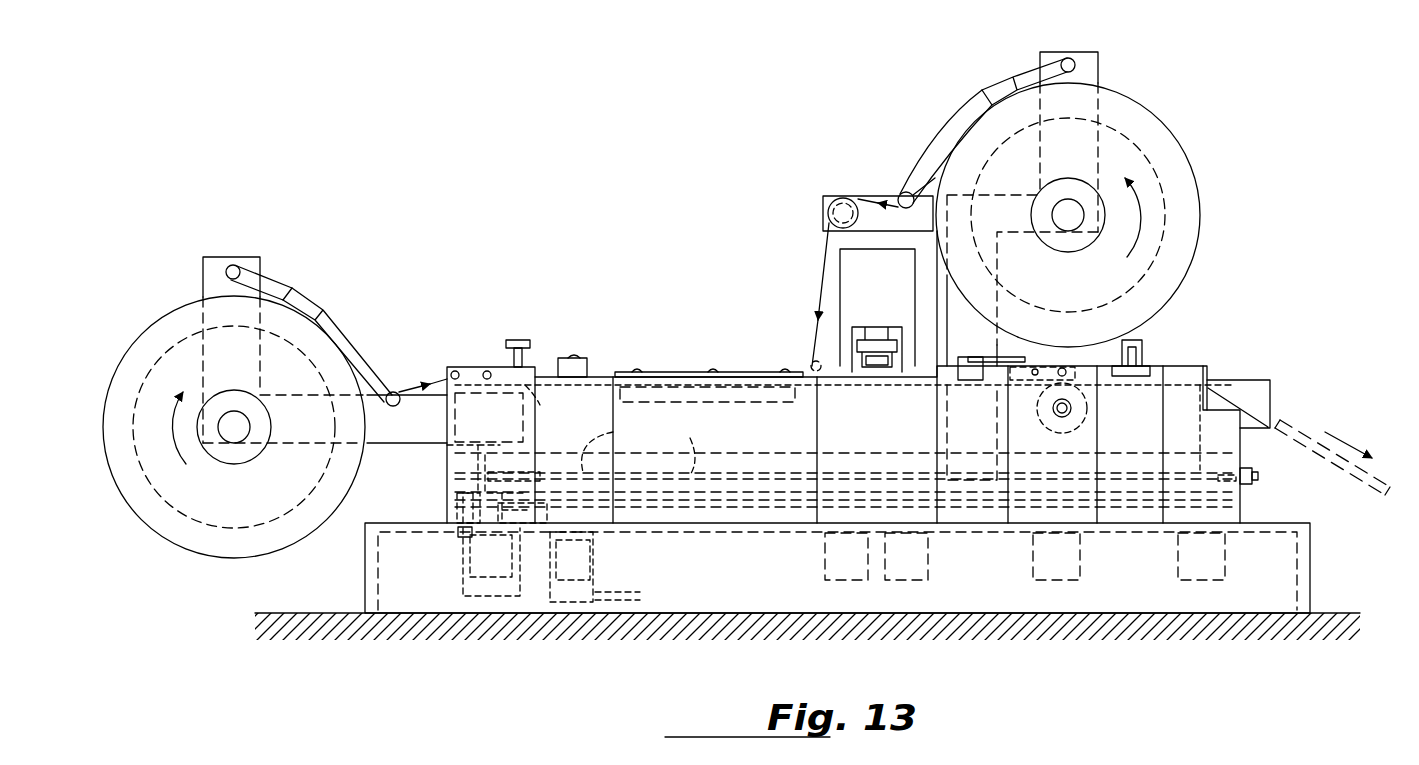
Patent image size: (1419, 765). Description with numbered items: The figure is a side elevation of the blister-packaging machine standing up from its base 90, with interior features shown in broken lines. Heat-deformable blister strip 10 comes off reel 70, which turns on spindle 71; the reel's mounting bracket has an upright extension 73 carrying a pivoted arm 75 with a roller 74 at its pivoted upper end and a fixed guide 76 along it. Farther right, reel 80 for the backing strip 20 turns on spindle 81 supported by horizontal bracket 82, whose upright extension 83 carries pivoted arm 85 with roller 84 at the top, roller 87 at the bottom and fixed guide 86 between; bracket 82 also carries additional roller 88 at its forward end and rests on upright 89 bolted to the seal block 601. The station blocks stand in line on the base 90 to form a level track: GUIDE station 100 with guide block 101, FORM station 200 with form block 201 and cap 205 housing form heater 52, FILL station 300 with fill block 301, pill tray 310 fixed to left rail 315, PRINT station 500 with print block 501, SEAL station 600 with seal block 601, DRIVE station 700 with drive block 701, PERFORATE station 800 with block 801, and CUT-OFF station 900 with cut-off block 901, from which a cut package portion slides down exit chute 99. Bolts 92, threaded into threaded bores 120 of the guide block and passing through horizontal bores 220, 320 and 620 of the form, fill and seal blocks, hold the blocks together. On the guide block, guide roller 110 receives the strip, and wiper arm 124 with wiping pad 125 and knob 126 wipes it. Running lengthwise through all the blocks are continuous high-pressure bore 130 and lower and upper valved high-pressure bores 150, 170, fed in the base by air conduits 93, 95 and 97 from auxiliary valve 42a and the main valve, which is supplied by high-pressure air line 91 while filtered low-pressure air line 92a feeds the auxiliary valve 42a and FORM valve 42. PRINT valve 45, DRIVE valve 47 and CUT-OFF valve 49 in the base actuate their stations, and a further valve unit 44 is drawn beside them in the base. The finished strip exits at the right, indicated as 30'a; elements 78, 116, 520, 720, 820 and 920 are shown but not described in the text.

The heat-deformable blister strip 10 is at (408, 404).
The backing strip 20 is at (826, 277).
The output conveyor 30'a is at (1332, 428).
The FORM valve 42 is at (560, 605).
The auxiliary valve 42a is at (588, 605).
The drive unit 44 is at (855, 580).
The PRINT valve 45 is at (915, 580).
The DRIVE valve 47 is at (1060, 580).
The CUT-OFF valve 49 is at (1226, 575).
The FORM HEATER 52 is at (381, 445).
The reel 70 is at (200, 548).
The spindle 71 is at (240, 432).
The upright extension 73 is at (205, 280).
The roller 74 is at (236, 266).
The pivoted arm 75 is at (335, 322).
The fixed guide 76 is at (300, 287).
The guide roller 78 is at (397, 391).
The reel 80 is at (1200, 232).
The spindle 81 is at (1072, 222).
The horizontal bracket 82 is at (1015, 228).
The upright extension 83 is at (1097, 70).
The roller 84 is at (1071, 60).
The pivoted arm 85 is at (960, 118).
The fixed guide 86 is at (990, 88).
The roller 87 is at (904, 192).
The additional roller 88 is at (836, 195).
The upright 89 is at (955, 316).
The base 90 is at (365, 570).
The high-pressure air line 91 is at (495, 598).
The bolts 92 is at (1258, 478).
The filtered low-pressure air line 92a is at (622, 600).
The air conduit 93 is at (456, 556).
The air conduit 95 is at (510, 530).
The air conduit 97 is at (491, 562).
The exit chute 99 is at (1250, 468).
The GUIDE station 100 is at (446, 473).
The guide block 101 is at (456, 500).
The guide roller 110 is at (452, 366).
The guide 116 is at (482, 370).
The threaded bores 120 is at (447, 452).
The wiper arm 124 is at (527, 372).
The wiping pad 125 is at (535, 392).
The knob 126 is at (520, 339).
The continuous high-pressure bore 130 is at (513, 492).
The valved high-pressure bore 150 is at (571, 567).
The valved high-pressure bore 170 is at (503, 445).
The FORM station 200 is at (595, 508).
The form block 201 is at (610, 525).
The cap 205 is at (582, 358).
The horizontal bores 220 is at (615, 437).
The FILL station 300 is at (710, 508).
The fill block 301 is at (757, 523).
The pill tray 310 is at (690, 406).
The left rail 315 is at (610, 372).
The bores 320 is at (675, 446).
The PRINT station 500 is at (822, 510).
The print block 501 is at (845, 523).
The station element 520 is at (840, 472).
The SEAL station 600 is at (958, 518).
The seal block 601 is at (990, 523).
The bores 620 is at (962, 468).
The DRIVE station 700 is at (1022, 515).
The drive block 701 is at (1090, 523).
The roller 720 is at (1047, 444).
The PERFORATE station 800 is at (1125, 515).
The perforate block 801 is at (1148, 523).
The station element 820 is at (1110, 470).
The CUT-OFF station 900 is at (1241, 503).
The cut-off block 901 is at (1225, 523).
The station element 920 is at (1198, 450).